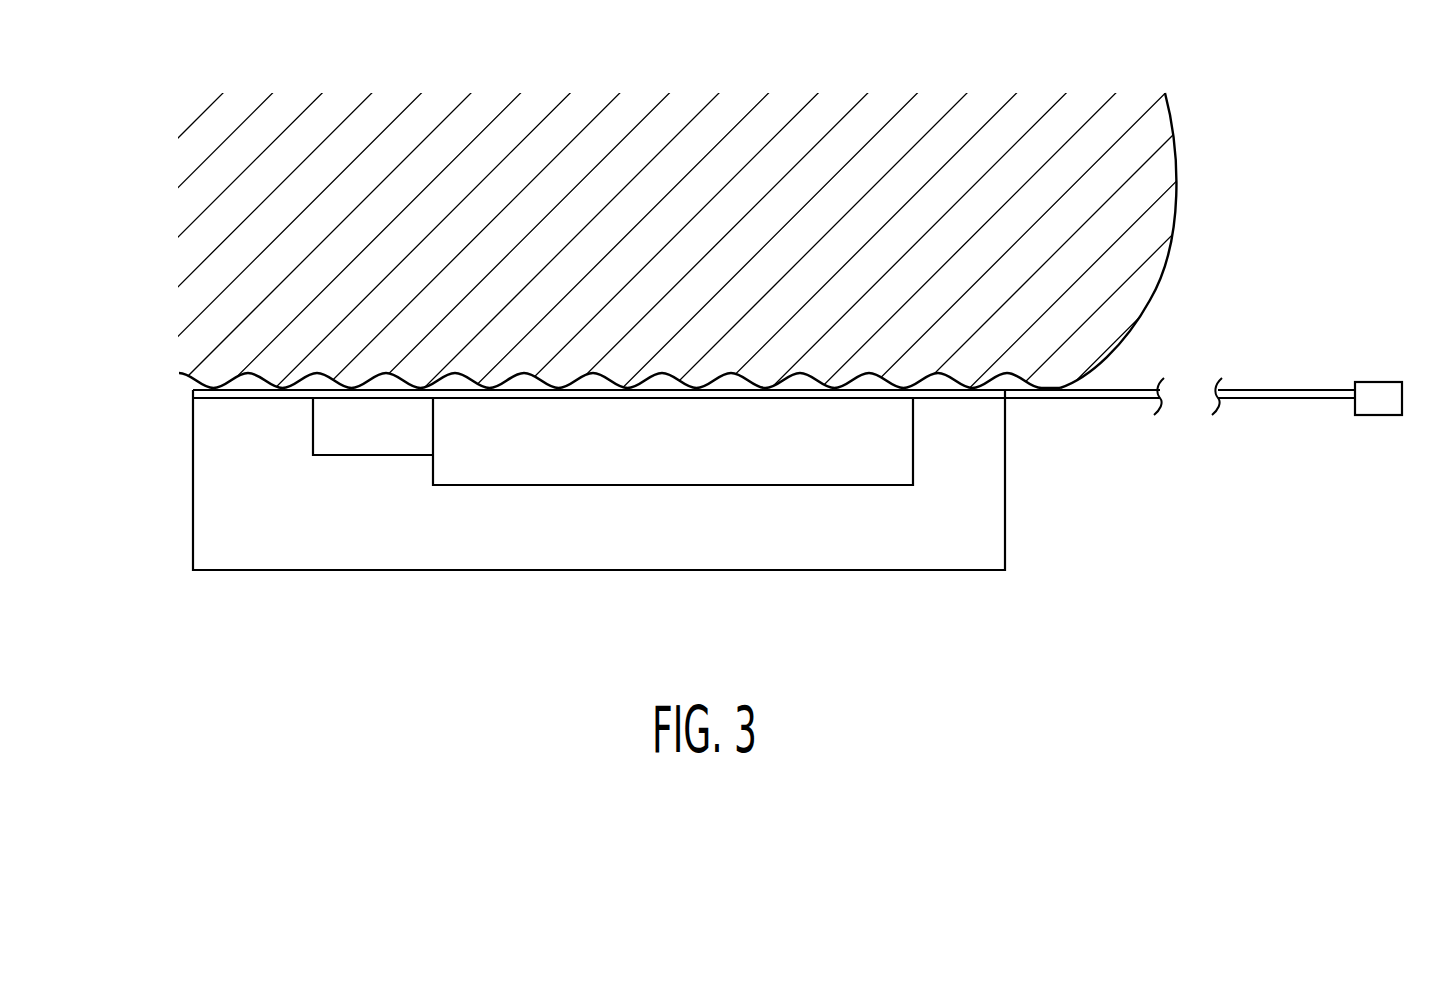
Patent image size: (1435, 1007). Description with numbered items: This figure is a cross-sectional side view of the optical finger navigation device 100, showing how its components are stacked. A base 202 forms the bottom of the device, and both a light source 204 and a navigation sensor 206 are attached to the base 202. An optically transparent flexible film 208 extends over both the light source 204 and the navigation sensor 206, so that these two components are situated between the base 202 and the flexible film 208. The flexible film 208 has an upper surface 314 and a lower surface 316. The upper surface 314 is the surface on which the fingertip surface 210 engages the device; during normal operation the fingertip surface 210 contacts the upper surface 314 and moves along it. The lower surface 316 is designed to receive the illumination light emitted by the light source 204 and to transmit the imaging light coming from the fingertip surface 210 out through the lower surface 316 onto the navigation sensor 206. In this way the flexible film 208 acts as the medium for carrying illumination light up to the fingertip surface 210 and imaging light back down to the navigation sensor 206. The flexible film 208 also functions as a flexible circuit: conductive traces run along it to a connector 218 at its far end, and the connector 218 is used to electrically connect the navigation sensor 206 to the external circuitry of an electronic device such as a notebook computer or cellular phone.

The optical finger navigation device 100 is at (1184, 269).
The base 202 is at (980, 572).
The light source 204 is at (340, 456).
The navigation sensor 206 is at (915, 459).
The optically transparent flexible film 208 is at (196, 392).
The fingertip surface 210 is at (312, 374).
The connector 218 is at (1382, 382).
The upper surface 314 is at (1144, 373).
The lower surface 316 is at (1127, 406).